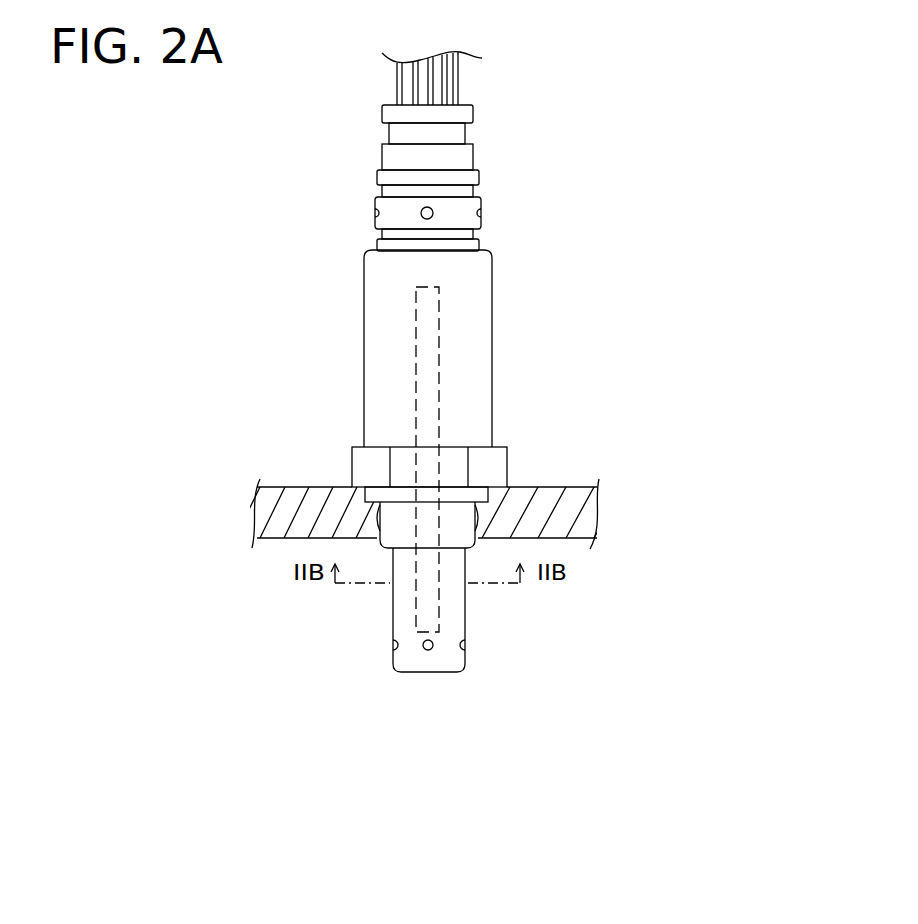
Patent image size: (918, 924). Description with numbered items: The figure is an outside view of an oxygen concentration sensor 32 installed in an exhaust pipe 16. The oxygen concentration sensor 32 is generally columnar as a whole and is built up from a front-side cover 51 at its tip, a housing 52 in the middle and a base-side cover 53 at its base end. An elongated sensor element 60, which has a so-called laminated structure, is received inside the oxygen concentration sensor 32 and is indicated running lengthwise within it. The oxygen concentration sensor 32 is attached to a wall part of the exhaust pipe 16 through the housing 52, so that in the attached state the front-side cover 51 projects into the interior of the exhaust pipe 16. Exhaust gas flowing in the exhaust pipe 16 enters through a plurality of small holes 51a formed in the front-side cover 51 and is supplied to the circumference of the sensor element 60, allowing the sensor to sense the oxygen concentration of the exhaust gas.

The oxygen concentration sensor 32 is at (300, 303).
The base-side cover 53 is at (492, 327).
The sensor element 60 is at (416, 389).
The housing 52 is at (507, 473).
The exhaust pipe 16 is at (580, 485).
The front-side cover 51 is at (465, 622).
The small holes 51a is at (460, 648).